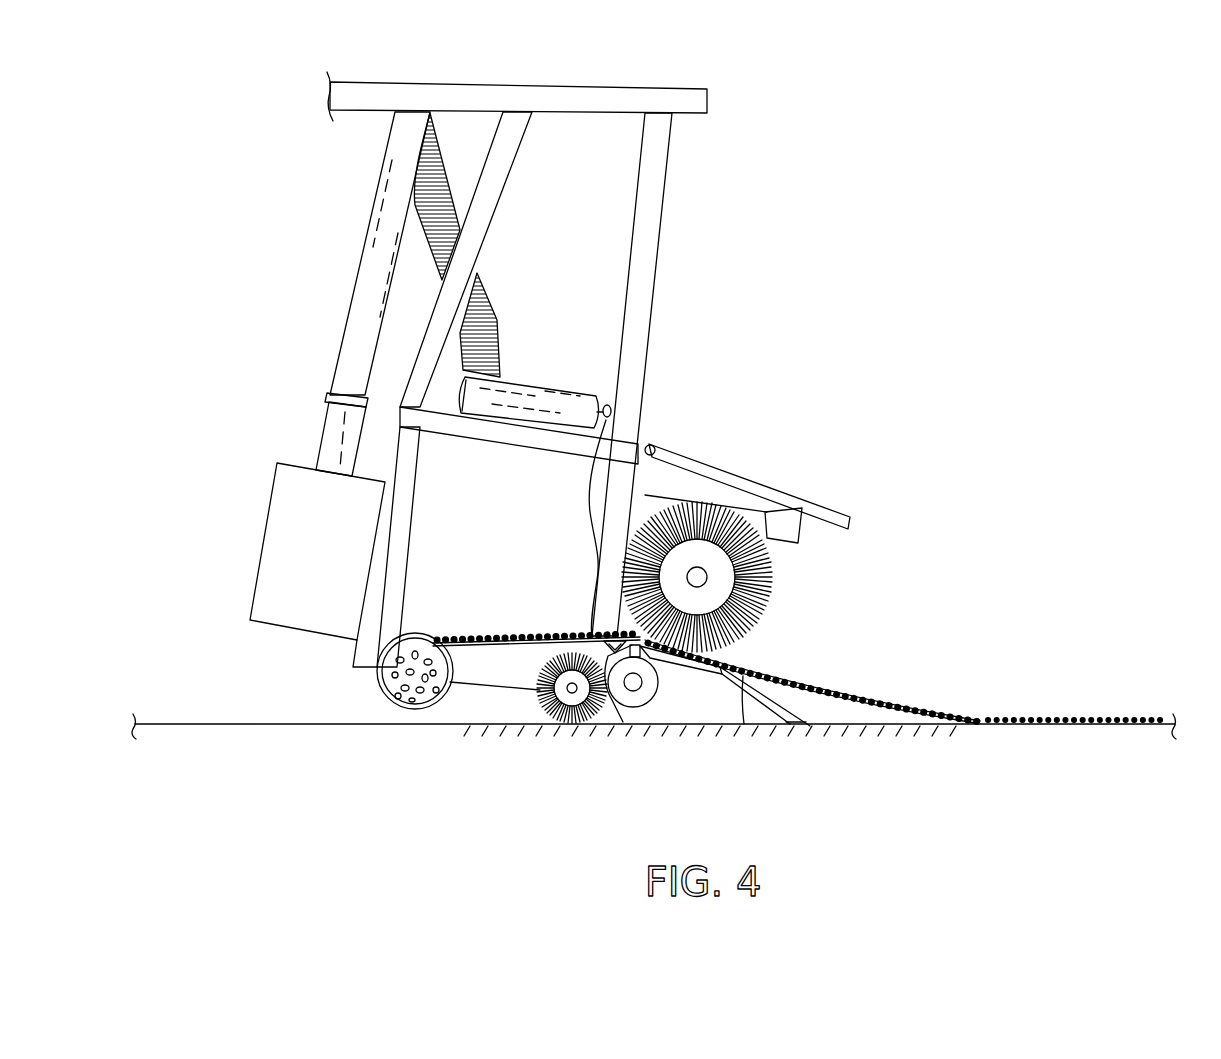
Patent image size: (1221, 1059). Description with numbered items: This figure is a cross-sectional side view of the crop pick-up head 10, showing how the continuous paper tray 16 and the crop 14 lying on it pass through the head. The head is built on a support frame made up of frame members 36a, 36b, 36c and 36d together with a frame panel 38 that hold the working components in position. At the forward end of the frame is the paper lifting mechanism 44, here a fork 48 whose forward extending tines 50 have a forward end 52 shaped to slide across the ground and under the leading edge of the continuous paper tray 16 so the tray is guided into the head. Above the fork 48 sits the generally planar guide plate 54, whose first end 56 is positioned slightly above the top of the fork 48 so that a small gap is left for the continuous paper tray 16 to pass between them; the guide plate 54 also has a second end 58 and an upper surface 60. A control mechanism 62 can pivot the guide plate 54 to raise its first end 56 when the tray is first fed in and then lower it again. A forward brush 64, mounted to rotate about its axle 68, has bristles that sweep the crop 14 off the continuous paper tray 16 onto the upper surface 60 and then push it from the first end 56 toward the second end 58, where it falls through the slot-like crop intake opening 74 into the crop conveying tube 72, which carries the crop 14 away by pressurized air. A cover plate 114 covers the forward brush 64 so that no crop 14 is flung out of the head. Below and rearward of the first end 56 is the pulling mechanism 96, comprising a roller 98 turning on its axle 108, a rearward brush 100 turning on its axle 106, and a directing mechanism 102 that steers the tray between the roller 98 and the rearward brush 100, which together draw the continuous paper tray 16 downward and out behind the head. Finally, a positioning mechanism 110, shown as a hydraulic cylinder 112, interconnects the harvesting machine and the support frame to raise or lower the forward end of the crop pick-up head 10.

The crop pick-up head 10 is at (829, 314).
The crop 14 is at (475, 626).
The continuous paper tray 16 is at (220, 726).
The frame member 36a is at (576, 102).
The frame member 36b is at (497, 180).
The frame member 36c is at (655, 250).
The frame member 36d is at (773, 520).
The frame panel 38 is at (622, 452).
The paper lifting mechanism 44 is at (806, 758).
The fork 48 is at (770, 724).
The tines 50 is at (743, 690).
The forward end of tines 52 is at (803, 722).
The guide plate 54 is at (508, 635).
The first end of guide plate 56 is at (622, 702).
The second end of guide plate 58 is at (446, 615).
The upper surface of guide plate 60 is at (540, 626).
The control mechanism 62 is at (513, 393).
The forward brush 64 is at (712, 598).
The axle of forward brush 68 is at (385, 623).
The crop conveying tube 72 is at (378, 676).
The crop intake opening 74 is at (423, 617).
The pulling mechanism 96 is at (595, 757).
The roller 98 is at (653, 680).
The rearward brush 100 is at (567, 688).
The directing mechanism 102 is at (580, 637).
The axle of rearward brush 106 is at (560, 717).
The axle of roller 108 is at (640, 690).
The positioning mechanism 110 is at (310, 234).
The hydraulic cylinder 112 is at (360, 318).
The cover plate 114 is at (707, 469).